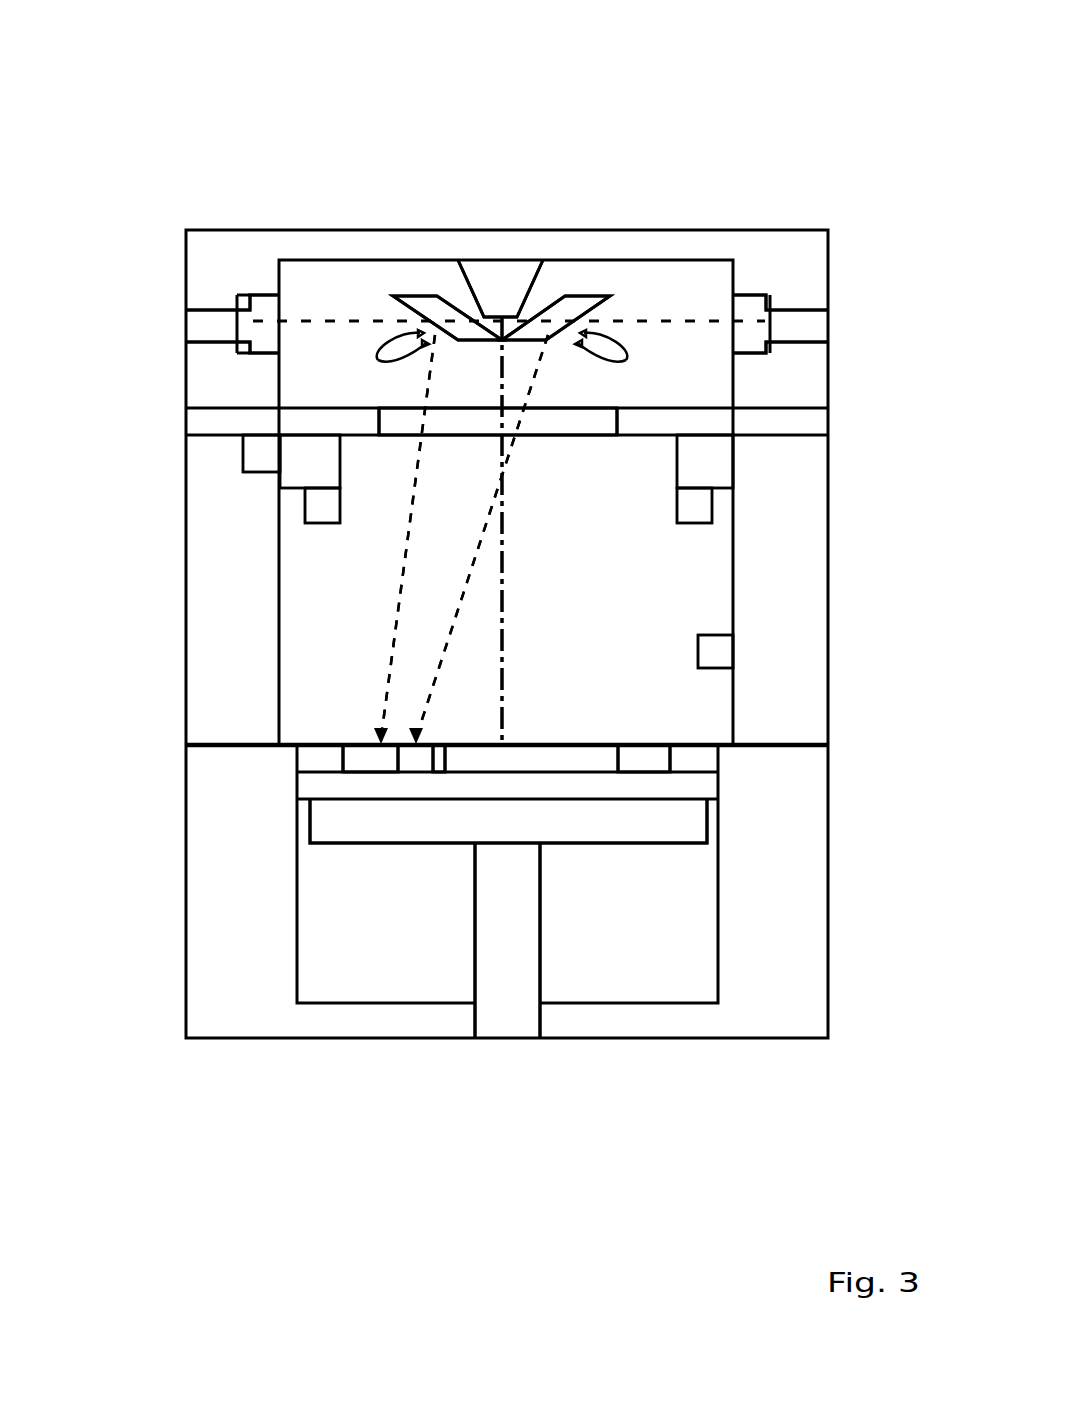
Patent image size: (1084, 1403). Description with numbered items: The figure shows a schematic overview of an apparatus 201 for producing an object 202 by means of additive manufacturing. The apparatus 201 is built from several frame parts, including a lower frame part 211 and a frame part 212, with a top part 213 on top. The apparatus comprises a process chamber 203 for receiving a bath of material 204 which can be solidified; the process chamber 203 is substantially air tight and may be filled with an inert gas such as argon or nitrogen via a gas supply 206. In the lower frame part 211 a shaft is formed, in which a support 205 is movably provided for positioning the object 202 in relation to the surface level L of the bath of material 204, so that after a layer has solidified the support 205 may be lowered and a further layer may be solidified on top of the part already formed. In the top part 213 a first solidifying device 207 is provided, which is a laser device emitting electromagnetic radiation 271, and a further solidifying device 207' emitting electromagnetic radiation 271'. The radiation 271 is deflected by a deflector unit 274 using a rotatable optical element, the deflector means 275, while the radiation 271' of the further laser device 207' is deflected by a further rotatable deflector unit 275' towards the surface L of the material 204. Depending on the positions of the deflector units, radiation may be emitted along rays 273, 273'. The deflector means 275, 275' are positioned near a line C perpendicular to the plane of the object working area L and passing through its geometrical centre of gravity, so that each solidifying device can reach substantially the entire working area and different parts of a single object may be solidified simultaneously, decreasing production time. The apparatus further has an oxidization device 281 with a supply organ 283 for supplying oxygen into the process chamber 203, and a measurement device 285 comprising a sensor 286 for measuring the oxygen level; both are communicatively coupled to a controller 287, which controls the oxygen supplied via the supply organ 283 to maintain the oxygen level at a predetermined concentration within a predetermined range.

The apparatus 201 is at (247, 188).
The top part 213 is at (213, 260).
The electromagnetic radiation 271 is at (695, 180).
The electromagnetic radiation 271' is at (381, 187).
The deflector unit 274 is at (503, 282).
The deflector means 275 is at (572, 215).
The further rotatable deflector unit 275' is at (447, 212).
The first solidifying device 207 is at (786, 214).
The further solidifying device 207' is at (177, 320).
The oxidization device 281 is at (310, 472).
The controller 287 is at (252, 460).
The supply organ 283 is at (328, 494).
The measurement device 285 is at (695, 445).
The sensor 286 is at (695, 498).
The ray 273 is at (662, 536).
The ray 273' is at (240, 536).
The line C is at (503, 583).
The surface level L is at (562, 742).
The gas supply 206 is at (713, 650).
The process chamber 203 is at (340, 679).
The object 202 is at (643, 765).
The frame part 212 is at (228, 707).
The lower frame part 211 is at (228, 938).
The material 204 is at (553, 755).
The support 205 is at (667, 878).